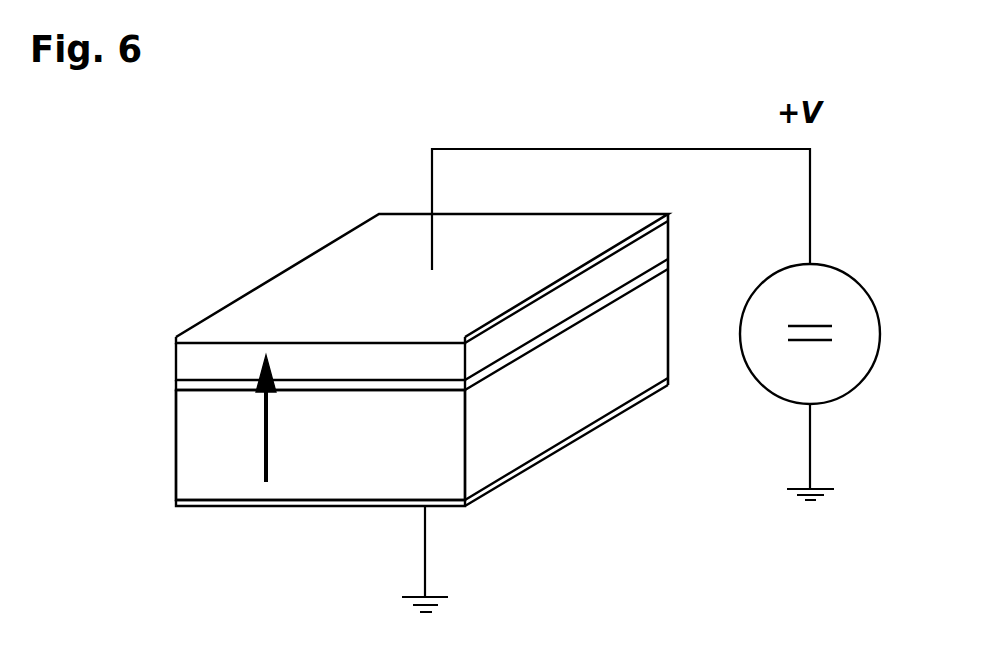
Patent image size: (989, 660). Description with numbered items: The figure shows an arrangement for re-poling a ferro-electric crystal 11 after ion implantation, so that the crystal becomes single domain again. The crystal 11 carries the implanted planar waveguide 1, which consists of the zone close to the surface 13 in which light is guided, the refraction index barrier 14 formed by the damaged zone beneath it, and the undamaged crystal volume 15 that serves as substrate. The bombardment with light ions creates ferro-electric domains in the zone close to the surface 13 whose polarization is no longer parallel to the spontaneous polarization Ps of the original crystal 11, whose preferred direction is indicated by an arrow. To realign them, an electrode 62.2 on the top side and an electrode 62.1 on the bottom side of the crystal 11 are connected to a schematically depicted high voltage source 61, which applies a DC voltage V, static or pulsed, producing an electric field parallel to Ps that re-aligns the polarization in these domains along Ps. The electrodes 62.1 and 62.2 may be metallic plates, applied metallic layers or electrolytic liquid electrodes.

The planar waveguide 1 is at (348, 351).
The non-linear optical crystal 11 is at (513, 417).
The zone close to the surface 13 is at (183, 357).
The refraction index barrier 14 is at (183, 385).
The undamaged crystal volume 15 is at (183, 485).
The high voltage source 61 is at (798, 385).
The electrode 62.1 is at (248, 503).
The electrode 62.2 is at (233, 318).